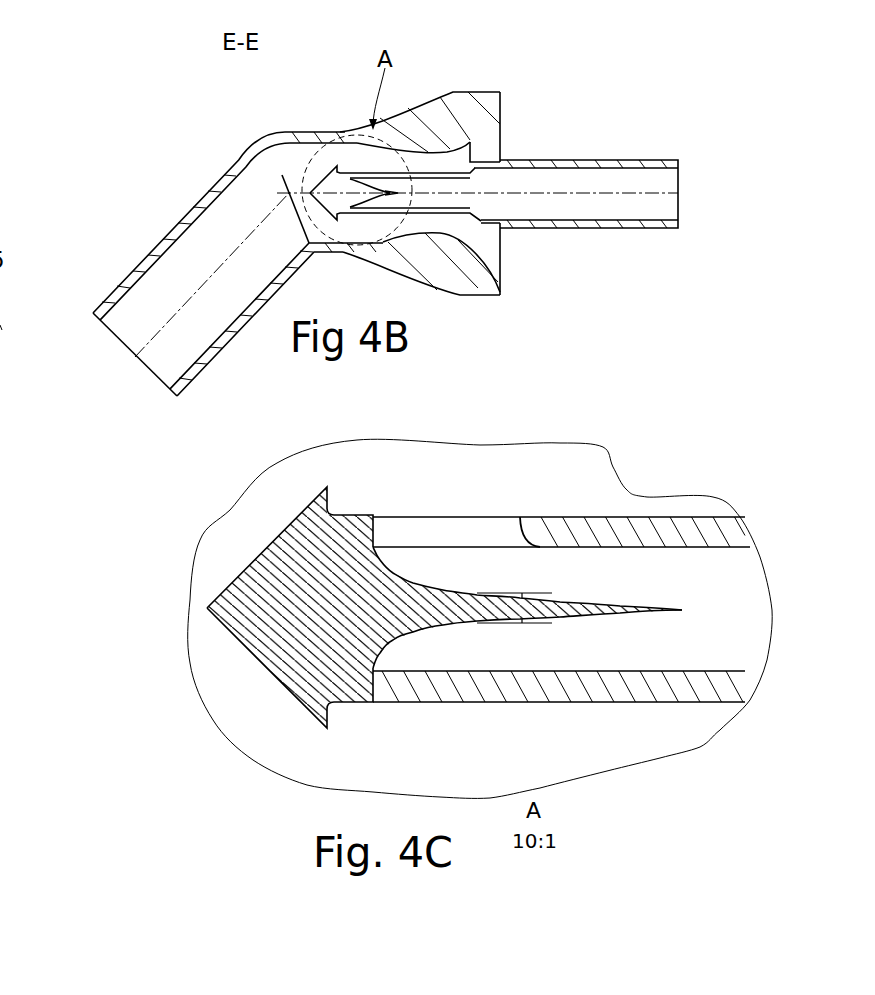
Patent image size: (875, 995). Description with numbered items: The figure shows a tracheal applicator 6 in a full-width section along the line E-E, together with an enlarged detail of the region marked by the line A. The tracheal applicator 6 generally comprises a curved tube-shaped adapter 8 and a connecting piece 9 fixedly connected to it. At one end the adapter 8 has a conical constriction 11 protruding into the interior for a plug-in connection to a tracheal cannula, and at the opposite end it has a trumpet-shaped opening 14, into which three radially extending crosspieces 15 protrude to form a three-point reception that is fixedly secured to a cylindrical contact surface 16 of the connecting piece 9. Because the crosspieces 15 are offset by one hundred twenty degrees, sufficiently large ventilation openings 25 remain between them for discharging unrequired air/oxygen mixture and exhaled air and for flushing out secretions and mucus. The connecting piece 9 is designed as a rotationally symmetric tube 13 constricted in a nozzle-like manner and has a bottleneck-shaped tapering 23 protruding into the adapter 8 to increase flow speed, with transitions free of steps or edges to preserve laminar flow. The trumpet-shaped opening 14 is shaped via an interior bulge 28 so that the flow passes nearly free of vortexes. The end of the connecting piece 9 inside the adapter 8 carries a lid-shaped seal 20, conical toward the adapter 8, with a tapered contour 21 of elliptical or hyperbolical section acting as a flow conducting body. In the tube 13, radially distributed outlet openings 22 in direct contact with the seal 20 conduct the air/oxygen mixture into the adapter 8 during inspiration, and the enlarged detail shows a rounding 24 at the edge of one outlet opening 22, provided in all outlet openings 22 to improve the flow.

In FIG. 4B, the tracheal applicator 6 is at (73, 99).
In FIG. 4B, the adapter 8 is at (222, 176).
In FIG. 4B, the connecting piece 9 is at (608, 160).
In FIG. 4B, the conical constriction 11 is at (137, 325).
In FIG. 4B, the tube 13 is at (622, 205).
In FIG. 4C, the tube 13 is at (747, 617).
In FIG. 4B, the trumpet-shaped opening 14 is at (413, 105).
In FIG. 4B, the crosspieces 15 is at (492, 152).
In FIG. 4B, the cylindrical contact surface 16 is at (500, 137).
In FIG. 4B, the lid-shaped seal 20 is at (310, 190).
In FIG. 4C, the lid-shaped seal 20 is at (207, 608).
In FIG. 4B, the tapered contour 21 is at (365, 180).
In FIG. 4C, the tapered contour 21 is at (650, 604).
In FIG. 4C, the outlet openings 22 is at (480, 537).
In FIG. 4B, the bottleneck-shaped tapering 23 is at (495, 180).
In FIG. 4C, the rounding 24 is at (532, 530).
In FIG. 4B, the ventilation openings 25 is at (493, 257).
In FIG. 4B, the interior bulge 28 is at (447, 146).